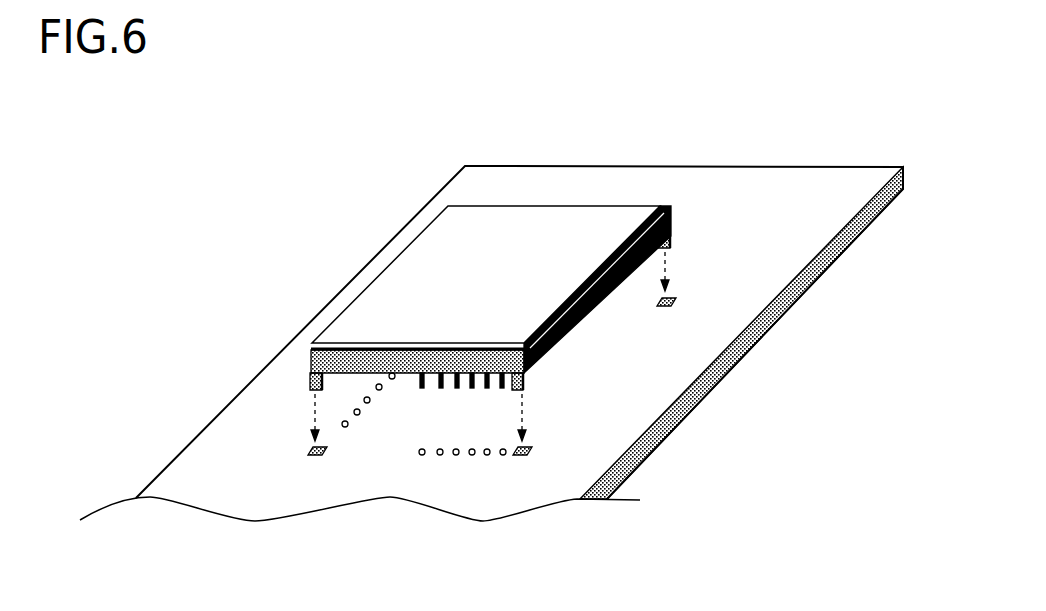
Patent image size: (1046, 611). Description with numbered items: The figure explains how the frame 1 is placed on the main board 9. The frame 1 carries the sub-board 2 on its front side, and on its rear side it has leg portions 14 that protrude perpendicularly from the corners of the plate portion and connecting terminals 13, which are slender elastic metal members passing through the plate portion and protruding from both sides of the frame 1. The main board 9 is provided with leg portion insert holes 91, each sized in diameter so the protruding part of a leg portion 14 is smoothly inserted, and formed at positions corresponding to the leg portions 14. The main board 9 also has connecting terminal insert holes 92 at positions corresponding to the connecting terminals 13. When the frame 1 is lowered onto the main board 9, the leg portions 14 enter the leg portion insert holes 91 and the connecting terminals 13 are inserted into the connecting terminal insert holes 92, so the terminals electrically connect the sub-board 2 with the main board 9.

The frame 1 is at (580, 323).
The sub-board 2 is at (599, 213).
The main board 9 is at (727, 167).
The connecting terminals 13 is at (443, 391).
The leg portions 14 is at (308, 385).
The leg portion insert holes 91 is at (318, 457).
The connecting terminal insert holes 92 is at (445, 456).